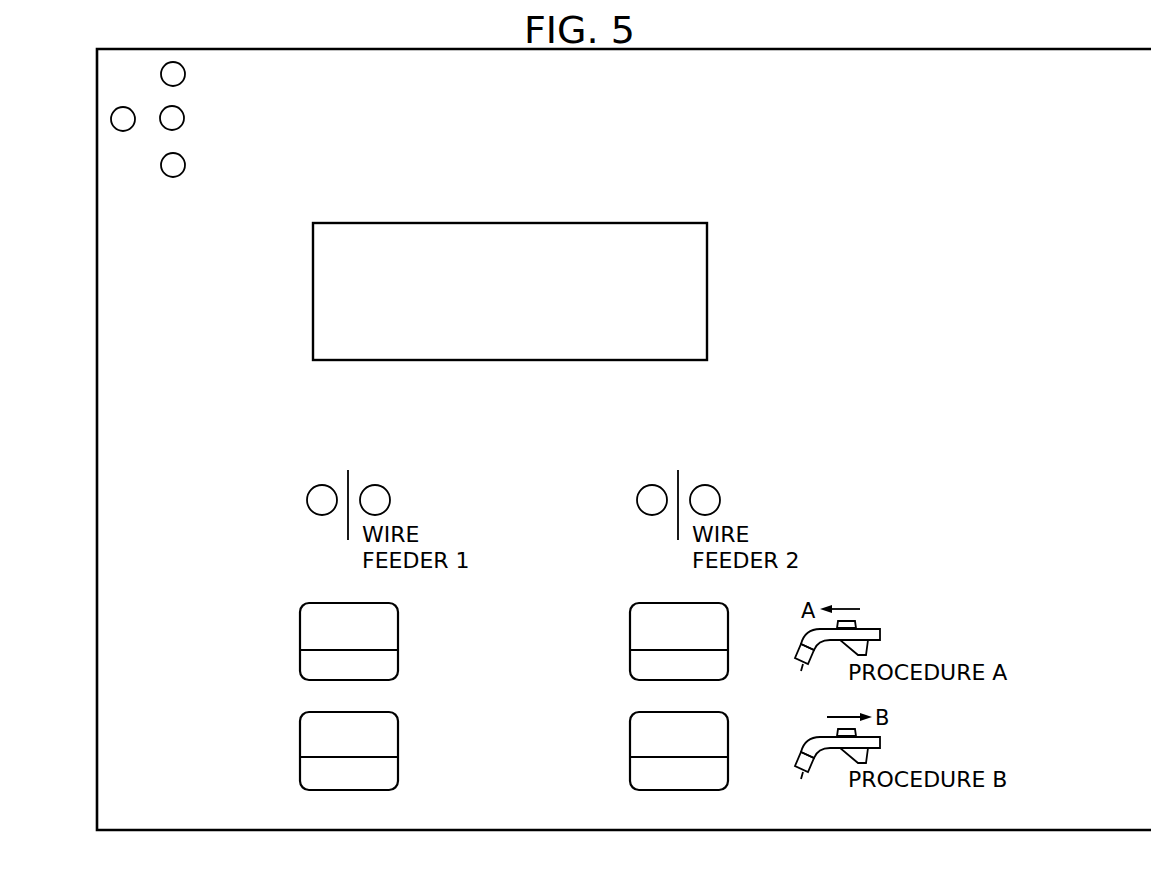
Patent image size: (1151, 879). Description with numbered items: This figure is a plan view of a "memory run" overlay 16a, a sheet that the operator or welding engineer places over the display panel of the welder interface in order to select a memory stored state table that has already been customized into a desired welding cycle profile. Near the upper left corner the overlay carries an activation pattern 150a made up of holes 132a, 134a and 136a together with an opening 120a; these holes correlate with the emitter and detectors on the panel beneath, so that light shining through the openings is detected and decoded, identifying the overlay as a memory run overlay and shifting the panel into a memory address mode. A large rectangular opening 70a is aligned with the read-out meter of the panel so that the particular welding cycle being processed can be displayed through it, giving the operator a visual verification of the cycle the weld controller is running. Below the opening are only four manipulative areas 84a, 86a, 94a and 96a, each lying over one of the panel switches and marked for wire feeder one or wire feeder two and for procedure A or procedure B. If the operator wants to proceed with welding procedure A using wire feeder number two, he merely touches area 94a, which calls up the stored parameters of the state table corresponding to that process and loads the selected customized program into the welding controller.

The overlay 16a is at (1008, 48).
The opening 70a is at (688, 269).
The manipulative area 84a is at (398, 623).
The manipulative area 86a is at (398, 730).
The manipulative area 94a is at (630, 632).
The manipulative area 96a is at (630, 737).
The opening 120a is at (177, 118).
The hole 132a is at (171, 73).
The hole 134a is at (125, 117).
The hole 136a is at (173, 170).
The activation pattern 150a is at (216, 81).